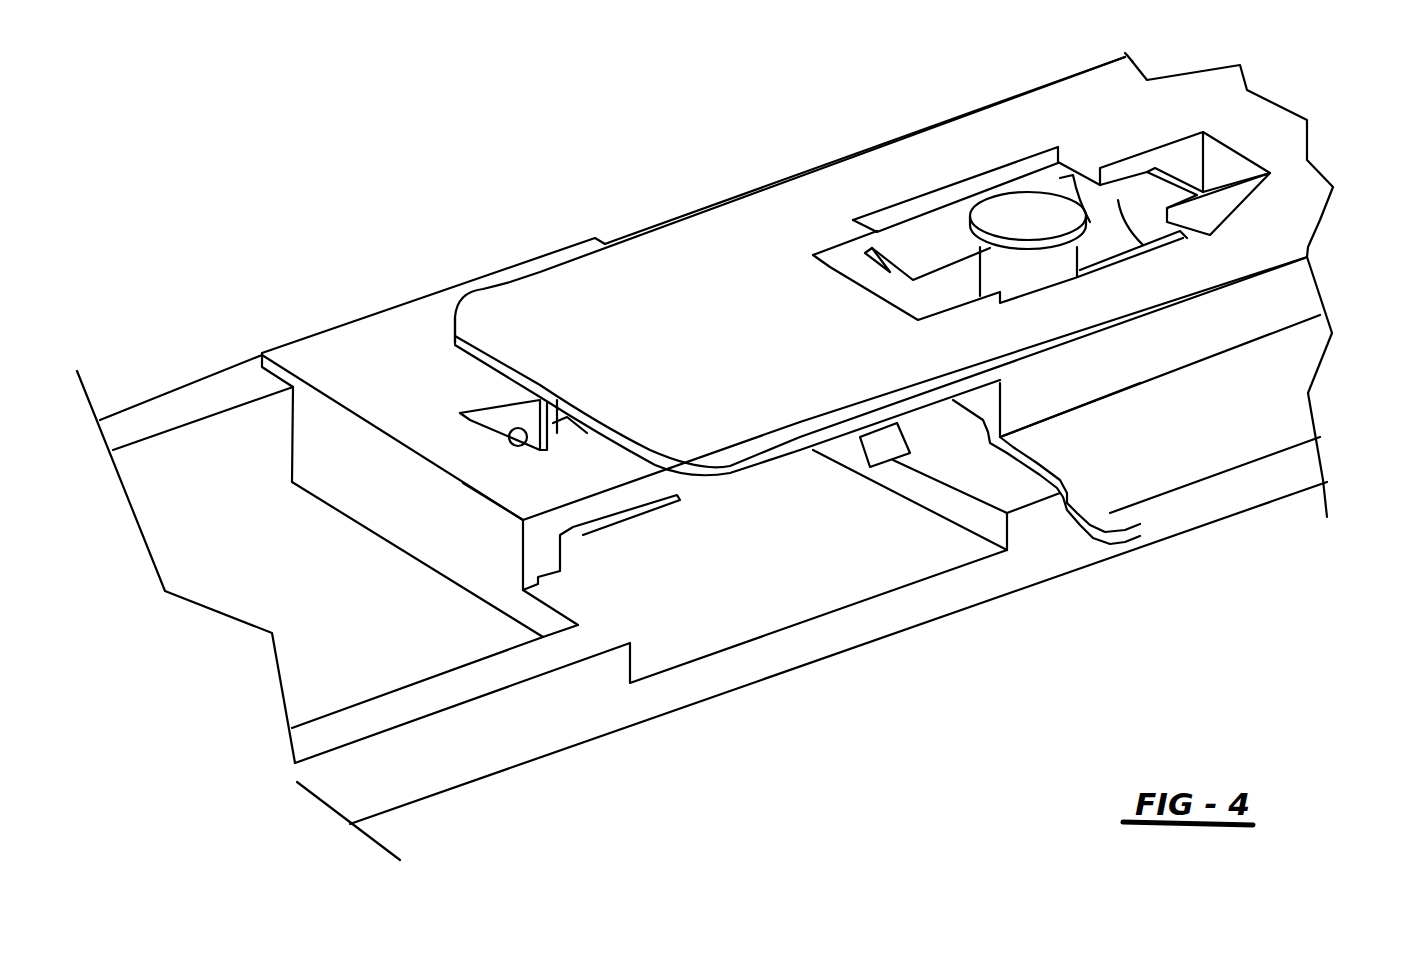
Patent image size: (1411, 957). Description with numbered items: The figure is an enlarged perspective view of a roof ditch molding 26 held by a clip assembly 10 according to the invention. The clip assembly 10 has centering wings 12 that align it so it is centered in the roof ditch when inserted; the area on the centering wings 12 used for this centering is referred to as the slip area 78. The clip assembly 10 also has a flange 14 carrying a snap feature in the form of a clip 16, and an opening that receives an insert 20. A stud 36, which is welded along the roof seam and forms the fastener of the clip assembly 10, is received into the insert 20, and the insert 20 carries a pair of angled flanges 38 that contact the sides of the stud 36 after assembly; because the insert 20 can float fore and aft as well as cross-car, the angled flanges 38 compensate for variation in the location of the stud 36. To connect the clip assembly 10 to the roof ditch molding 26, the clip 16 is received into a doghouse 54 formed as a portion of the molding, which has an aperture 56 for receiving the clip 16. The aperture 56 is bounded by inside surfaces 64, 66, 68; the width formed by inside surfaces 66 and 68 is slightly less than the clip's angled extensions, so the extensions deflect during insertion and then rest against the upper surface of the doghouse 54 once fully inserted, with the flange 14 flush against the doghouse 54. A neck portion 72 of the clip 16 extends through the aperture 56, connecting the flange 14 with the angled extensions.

The clip assembly 10 is at (1022, 133).
The centering wing 12 is at (1127, 482).
The flange 14 is at (680, 277).
The clip 16 is at (520, 417).
The insert 20 is at (1140, 197).
The roof ditch molding 26 is at (360, 678).
The stud 36 is at (1007, 212).
The angled flange 38 is at (910, 233).
The doghouse 54 is at (668, 531).
The aperture 56 is at (520, 420).
The inside surface 64 is at (487, 421).
The inside surface 66 is at (517, 407).
The inside surface 68 is at (557, 425).
The neck portion 72 is at (560, 423).
The slip area 78 is at (1230, 423).